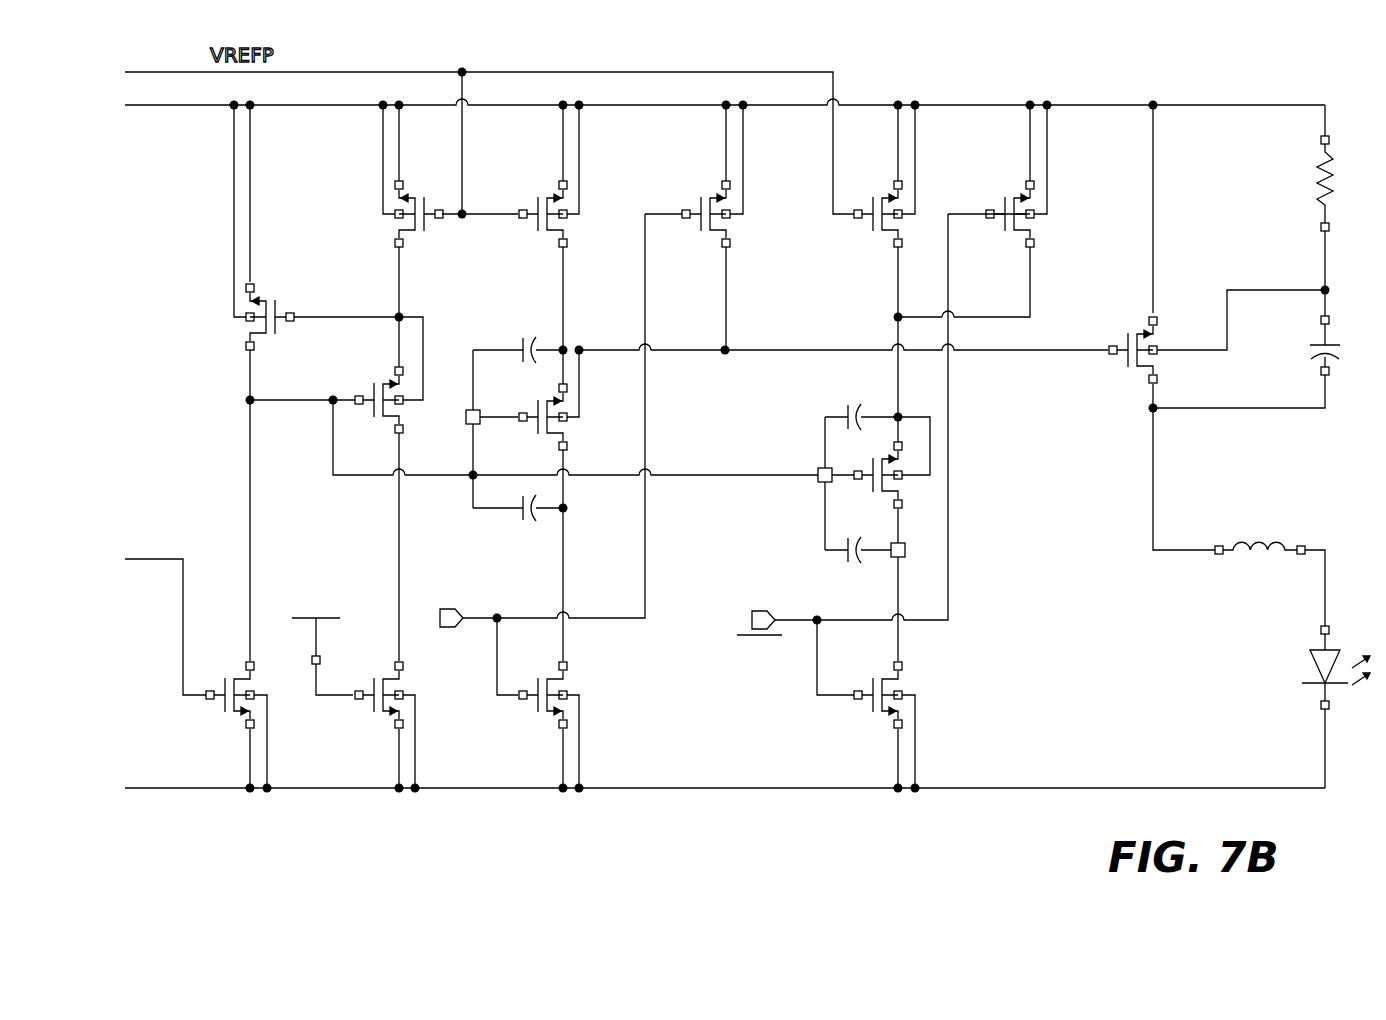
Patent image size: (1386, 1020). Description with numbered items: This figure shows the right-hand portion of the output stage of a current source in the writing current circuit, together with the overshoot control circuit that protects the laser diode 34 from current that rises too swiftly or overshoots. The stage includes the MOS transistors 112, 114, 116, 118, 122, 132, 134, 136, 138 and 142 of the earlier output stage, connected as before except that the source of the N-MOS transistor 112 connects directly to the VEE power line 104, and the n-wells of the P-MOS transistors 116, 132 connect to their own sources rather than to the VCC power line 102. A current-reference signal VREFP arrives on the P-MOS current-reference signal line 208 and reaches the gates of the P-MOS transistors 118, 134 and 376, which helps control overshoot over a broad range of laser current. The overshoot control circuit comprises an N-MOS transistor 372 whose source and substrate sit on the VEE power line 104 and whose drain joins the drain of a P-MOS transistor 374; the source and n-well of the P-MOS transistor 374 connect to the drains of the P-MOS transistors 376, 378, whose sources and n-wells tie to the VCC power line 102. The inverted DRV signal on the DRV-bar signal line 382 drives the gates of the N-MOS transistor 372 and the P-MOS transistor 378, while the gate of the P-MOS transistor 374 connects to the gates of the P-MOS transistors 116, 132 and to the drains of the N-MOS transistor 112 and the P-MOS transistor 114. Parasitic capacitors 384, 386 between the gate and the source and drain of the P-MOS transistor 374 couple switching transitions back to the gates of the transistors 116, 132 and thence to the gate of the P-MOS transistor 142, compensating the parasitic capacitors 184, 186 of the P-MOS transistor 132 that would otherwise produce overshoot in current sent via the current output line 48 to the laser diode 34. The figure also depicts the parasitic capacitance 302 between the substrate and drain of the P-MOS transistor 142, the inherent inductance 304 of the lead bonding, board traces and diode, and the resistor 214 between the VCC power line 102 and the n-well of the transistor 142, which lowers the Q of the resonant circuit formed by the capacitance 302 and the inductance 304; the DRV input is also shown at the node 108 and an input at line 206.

The P-MOS current-reference signal line 208 is at (490, 72).
The VCC power line 102 is at (1185, 105).
The VEE power line 104 is at (720, 790).
The P-MOS transistor 118 is at (412, 232).
The P-MOS transistor 134 is at (553, 233).
The MOS transistor 138 is at (715, 233).
The P-MOS transistor 376 is at (888, 233).
The P-MOS transistor 378 is at (1020, 233).
The P-MOS transistor 114 is at (260, 336).
The P-MOS transistor 116 is at (390, 380).
The input node 206 is at (155, 559).
The N-MOS transistor 112 is at (235, 720).
The MOS transistor 122 is at (383, 720).
The parasitic capacitor 184 is at (513, 345).
The P-MOS transistor 132 is at (553, 395).
The parasitic capacitor 186 is at (513, 520).
The drive node 108 is at (604, 620).
The MOS transistor 136 is at (545, 720).
The parasitic capacitor 384 is at (846, 405).
The P-MOS transistor 374 is at (887, 500).
The parasitic capacitor 386 is at (846, 562).
The DRV-bar signal line 382 is at (948, 520).
The N-MOS transistor 372 is at (883, 720).
The P-MOS transistor 142 is at (1140, 372).
The resistor 214 is at (1322, 170).
The parasitic capacitance 302 is at (1316, 360).
The current output line 48 is at (1188, 558).
The inductance 304 is at (1258, 530).
The laser diode 34 is at (1318, 648).